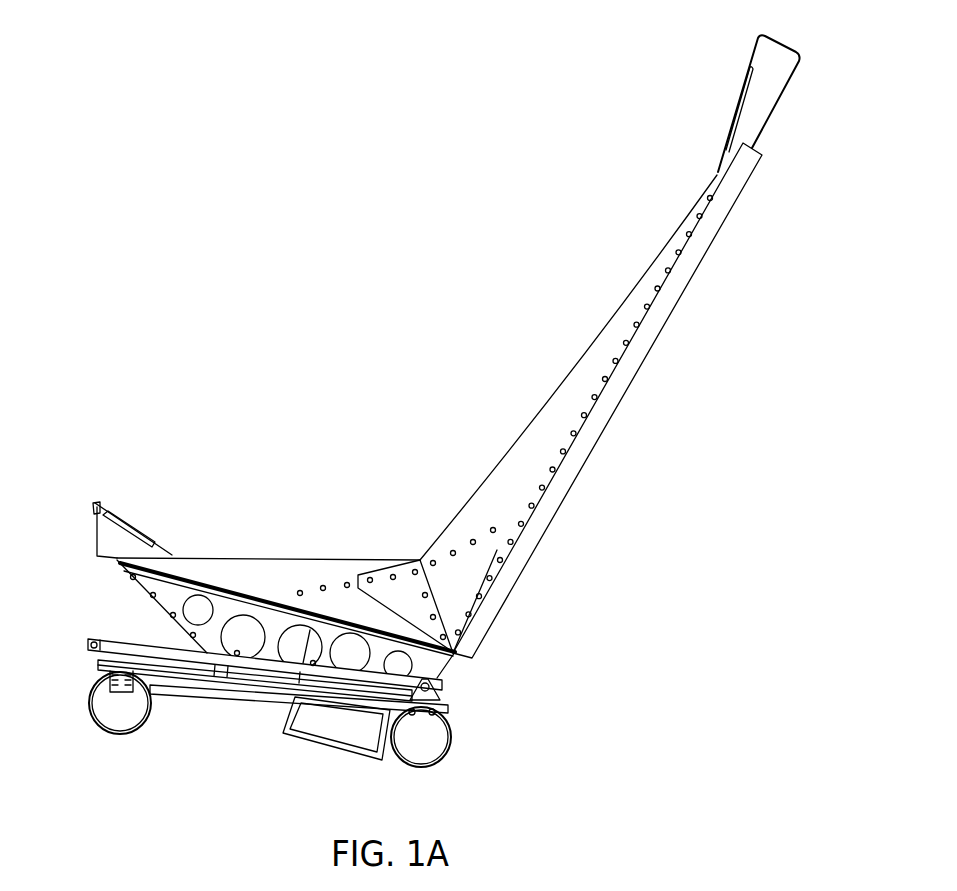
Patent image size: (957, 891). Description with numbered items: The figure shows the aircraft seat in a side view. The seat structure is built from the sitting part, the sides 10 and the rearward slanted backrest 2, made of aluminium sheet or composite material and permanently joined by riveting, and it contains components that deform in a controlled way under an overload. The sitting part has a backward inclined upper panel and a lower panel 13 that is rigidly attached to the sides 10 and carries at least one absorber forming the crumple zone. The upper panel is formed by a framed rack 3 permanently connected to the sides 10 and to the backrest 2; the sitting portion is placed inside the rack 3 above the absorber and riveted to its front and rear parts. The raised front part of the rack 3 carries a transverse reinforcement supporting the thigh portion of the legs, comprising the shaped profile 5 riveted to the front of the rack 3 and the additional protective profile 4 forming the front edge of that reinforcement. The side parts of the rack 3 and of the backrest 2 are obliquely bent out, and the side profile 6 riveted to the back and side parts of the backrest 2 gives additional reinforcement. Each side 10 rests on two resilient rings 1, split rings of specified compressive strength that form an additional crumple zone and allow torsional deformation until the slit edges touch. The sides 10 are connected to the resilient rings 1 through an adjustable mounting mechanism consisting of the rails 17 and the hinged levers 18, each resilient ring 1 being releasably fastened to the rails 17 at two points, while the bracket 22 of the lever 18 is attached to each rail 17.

The resilient ring 1 is at (452, 742).
The backrest 2 is at (724, 146).
The rack 3 is at (97, 553).
The protective profile 4 is at (94, 505).
The shaped profile 5 is at (138, 536).
The side profile 6 is at (540, 561).
The side 10 is at (155, 606).
The lower panel 13 is at (283, 731).
The rail 17 is at (449, 707).
The hinged lever 18 is at (90, 647).
The bracket 22 is at (437, 692).